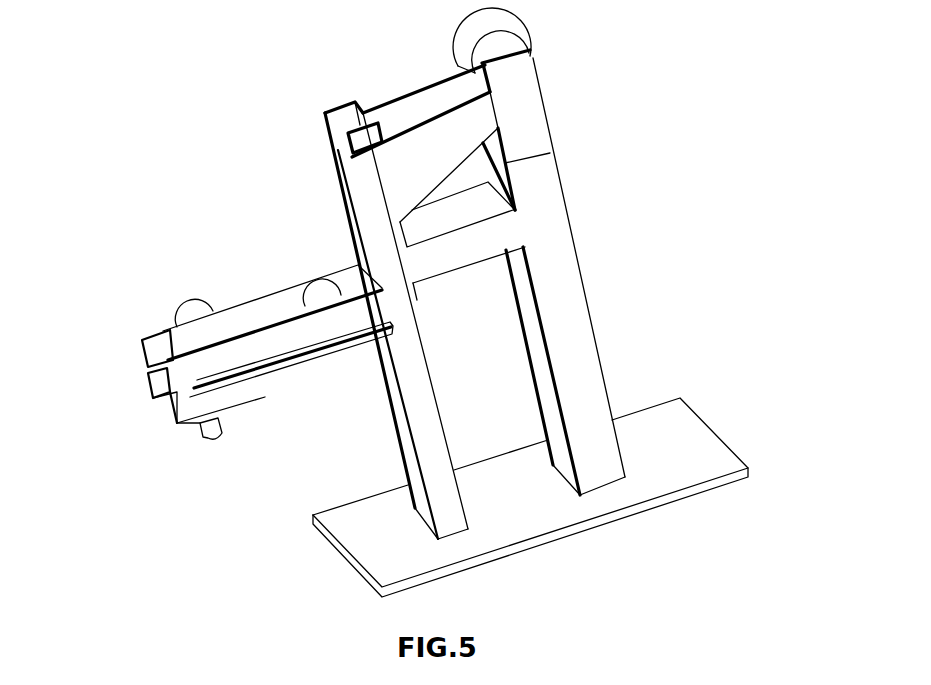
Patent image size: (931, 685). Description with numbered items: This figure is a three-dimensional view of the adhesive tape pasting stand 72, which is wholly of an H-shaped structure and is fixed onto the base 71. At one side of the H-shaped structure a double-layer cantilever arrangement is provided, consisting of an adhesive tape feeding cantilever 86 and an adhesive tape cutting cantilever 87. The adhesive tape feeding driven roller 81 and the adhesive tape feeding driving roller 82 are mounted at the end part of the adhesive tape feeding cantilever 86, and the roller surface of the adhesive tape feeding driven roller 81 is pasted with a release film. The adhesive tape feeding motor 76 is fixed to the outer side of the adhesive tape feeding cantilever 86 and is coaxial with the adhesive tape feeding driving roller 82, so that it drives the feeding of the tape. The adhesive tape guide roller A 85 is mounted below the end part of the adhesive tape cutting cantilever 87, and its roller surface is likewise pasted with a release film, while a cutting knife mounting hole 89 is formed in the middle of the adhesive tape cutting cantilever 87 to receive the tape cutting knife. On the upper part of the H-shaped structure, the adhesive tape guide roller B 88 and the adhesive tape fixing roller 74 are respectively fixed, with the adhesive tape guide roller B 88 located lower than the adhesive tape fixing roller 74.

The base 71 is at (672, 457).
The adhesive tape pasting stand 72 is at (556, 303).
The adhesive tape fixing roller 74 is at (506, 43).
The adhesive tape feeding motor 76 is at (209, 306).
The adhesive tape feeding driven roller 81 is at (173, 342).
The adhesive tape feeding driving roller 82 is at (212, 335).
The adhesive tape guide roller A 85 is at (200, 423).
The adhesive tape feeding cantilever 86 is at (187, 373).
The adhesive tape cutting cantilever 87 is at (193, 407).
The adhesive tape guide roller B 88 is at (350, 173).
The cutting knife mounting hole 89 is at (262, 368).